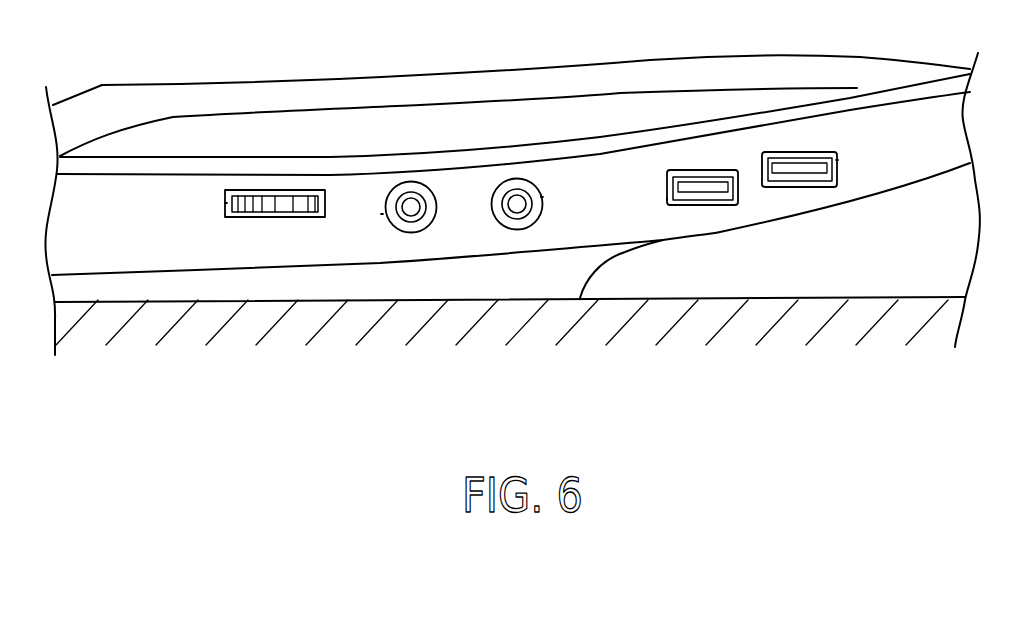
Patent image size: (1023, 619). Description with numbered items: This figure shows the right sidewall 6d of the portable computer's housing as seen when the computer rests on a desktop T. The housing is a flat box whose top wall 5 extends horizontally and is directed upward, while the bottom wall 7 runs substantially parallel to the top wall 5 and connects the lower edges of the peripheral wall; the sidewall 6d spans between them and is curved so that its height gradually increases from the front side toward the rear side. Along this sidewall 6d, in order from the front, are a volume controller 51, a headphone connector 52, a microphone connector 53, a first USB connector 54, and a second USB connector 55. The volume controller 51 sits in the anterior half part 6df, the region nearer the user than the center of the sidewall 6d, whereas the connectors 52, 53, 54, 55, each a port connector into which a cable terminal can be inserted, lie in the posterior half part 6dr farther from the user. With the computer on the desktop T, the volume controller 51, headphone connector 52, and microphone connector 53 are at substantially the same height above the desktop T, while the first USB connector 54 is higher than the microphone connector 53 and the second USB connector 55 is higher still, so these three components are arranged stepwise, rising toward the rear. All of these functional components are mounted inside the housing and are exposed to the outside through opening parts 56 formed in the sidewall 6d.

The top wall 5 is at (550, 67).
The right sidewall 6d is at (353, 188).
The anterior half part 6df is at (128, 193).
The posterior half part 6dr is at (633, 173).
The bottom wall 7 is at (528, 300).
The desktop T is at (920, 295).
The volume controller 51 is at (270, 208).
The headphone connector 52 is at (412, 210).
The microphone connector 53 is at (520, 207).
The first USB connector 54 is at (700, 193).
The second USB connector 55 is at (797, 175).
The opening parts 56 is at (227, 203).